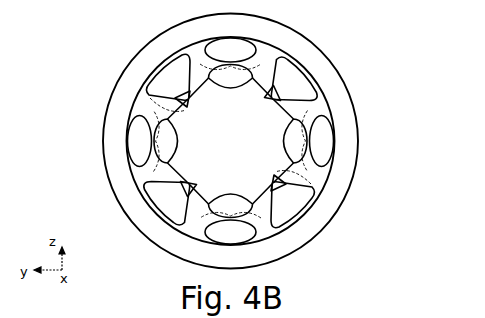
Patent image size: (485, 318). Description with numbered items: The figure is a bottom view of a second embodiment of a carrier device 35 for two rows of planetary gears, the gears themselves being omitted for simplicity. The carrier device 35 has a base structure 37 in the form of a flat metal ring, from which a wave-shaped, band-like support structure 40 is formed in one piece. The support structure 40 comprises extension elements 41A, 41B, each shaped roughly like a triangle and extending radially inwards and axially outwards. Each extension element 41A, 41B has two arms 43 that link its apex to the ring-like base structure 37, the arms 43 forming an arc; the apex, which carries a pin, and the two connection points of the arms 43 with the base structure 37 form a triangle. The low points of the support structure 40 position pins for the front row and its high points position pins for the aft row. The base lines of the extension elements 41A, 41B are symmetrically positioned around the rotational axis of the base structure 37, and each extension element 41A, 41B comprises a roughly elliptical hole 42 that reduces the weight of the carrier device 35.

The carrier device 35 is at (364, 94).
The base structure 37 is at (352, 185).
The support structure 40 is at (160, 107).
The extension element 41A is at (231, 89).
The extension element 41B is at (192, 178).
The hole 42 is at (230, 50).
The arm 43 is at (150, 187).